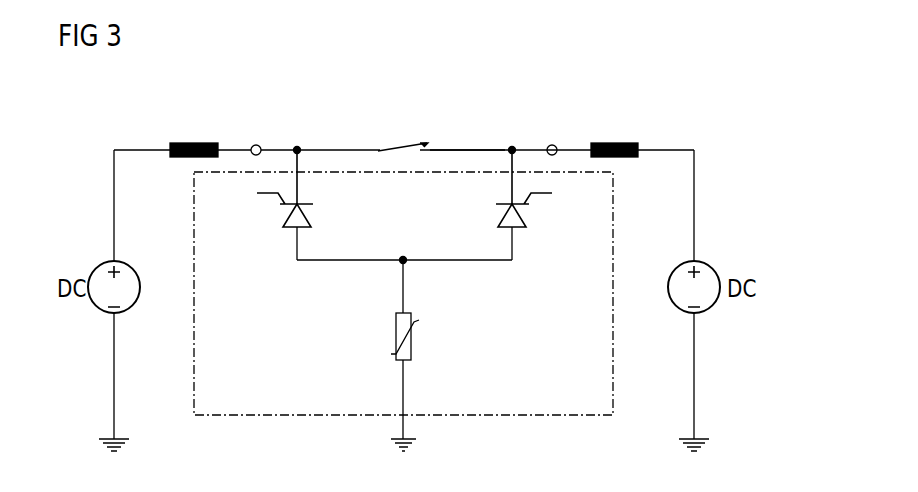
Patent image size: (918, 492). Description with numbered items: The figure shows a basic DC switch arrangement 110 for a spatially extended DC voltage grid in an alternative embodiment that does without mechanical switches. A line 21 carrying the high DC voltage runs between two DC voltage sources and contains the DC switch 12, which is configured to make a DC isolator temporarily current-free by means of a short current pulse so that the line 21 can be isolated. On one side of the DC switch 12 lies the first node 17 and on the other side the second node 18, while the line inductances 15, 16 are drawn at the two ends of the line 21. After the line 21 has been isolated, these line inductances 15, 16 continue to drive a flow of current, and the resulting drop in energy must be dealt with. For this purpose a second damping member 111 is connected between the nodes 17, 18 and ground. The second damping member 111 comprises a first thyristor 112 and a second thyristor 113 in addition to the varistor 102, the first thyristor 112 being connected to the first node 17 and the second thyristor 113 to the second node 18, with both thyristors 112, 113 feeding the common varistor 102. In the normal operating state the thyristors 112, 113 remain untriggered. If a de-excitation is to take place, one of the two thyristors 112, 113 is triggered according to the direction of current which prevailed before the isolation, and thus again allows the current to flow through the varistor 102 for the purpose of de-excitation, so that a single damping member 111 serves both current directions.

The DC switch arrangement 110 is at (564, 89).
The second damping member 111 is at (553, 416).
The first thyristor 112 is at (528, 213).
The second thyristor 113 is at (284, 213).
The varistor 102 is at (416, 342).
The DC switch 12 is at (399, 143).
The line inductance 15 is at (615, 142).
The line inductance 16 is at (190, 141).
The first node 17 is at (512, 148).
The second node 18 is at (297, 148).
The line 21 is at (466, 149).